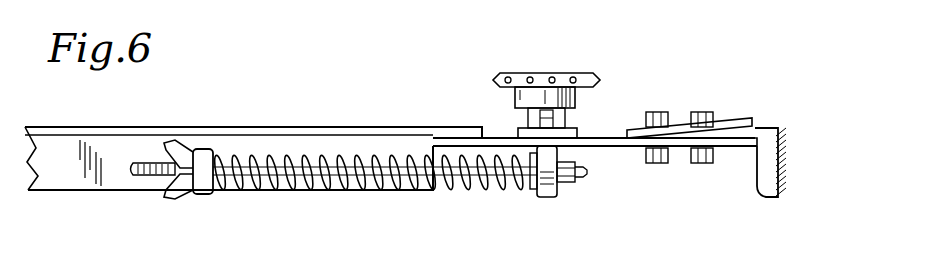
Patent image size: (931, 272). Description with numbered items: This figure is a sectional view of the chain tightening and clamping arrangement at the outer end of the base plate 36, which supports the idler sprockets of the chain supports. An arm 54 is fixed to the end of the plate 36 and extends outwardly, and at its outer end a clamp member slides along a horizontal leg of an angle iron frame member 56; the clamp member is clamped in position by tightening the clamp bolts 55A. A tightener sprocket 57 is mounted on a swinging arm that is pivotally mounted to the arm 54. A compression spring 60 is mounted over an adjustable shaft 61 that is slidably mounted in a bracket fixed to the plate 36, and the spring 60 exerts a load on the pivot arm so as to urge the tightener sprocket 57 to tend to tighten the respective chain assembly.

The base plate 36 is at (247, 133).
The adjustable shaft 61 is at (273, 192).
The compression spring 60 is at (382, 193).
The arm 54 is at (613, 147).
The tightener sprocket 57 is at (578, 78).
The clamp bolts 55A is at (680, 123).
The angle iron frame member 56 is at (758, 132).